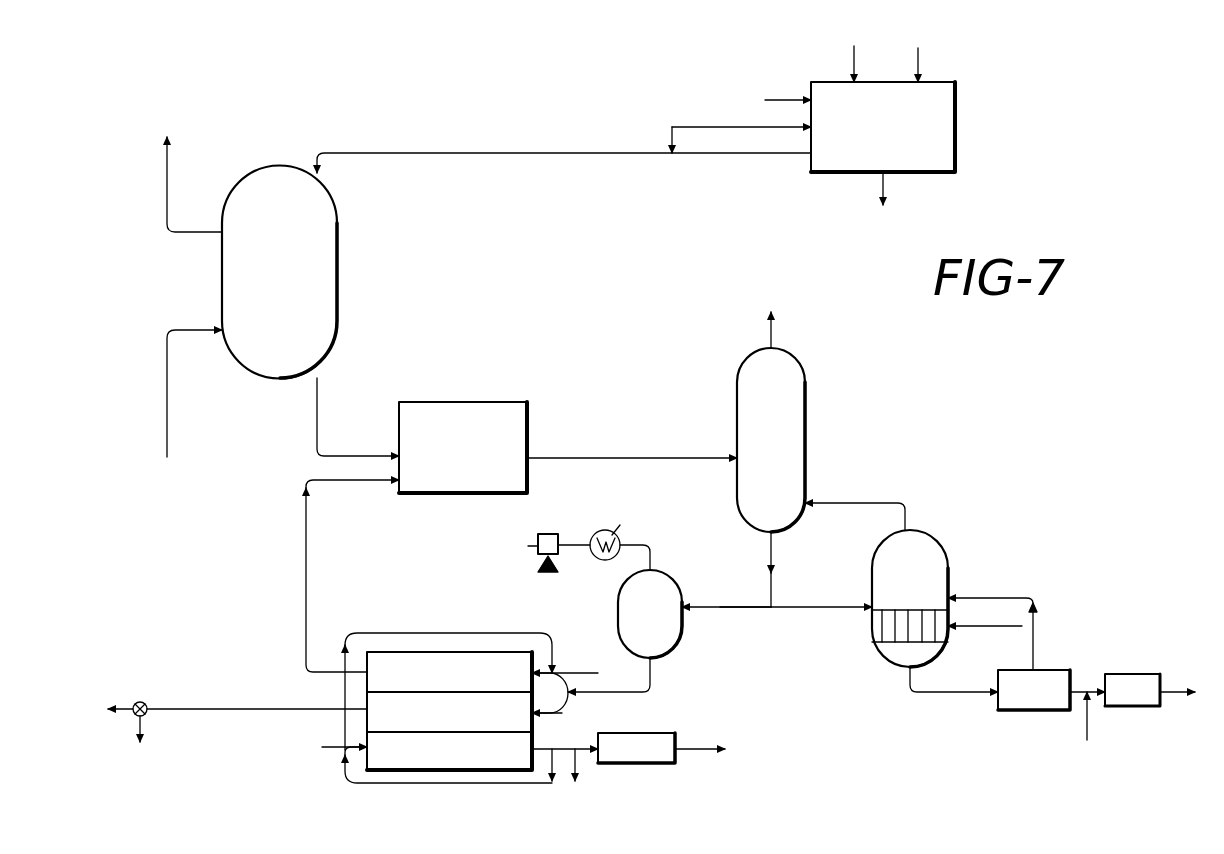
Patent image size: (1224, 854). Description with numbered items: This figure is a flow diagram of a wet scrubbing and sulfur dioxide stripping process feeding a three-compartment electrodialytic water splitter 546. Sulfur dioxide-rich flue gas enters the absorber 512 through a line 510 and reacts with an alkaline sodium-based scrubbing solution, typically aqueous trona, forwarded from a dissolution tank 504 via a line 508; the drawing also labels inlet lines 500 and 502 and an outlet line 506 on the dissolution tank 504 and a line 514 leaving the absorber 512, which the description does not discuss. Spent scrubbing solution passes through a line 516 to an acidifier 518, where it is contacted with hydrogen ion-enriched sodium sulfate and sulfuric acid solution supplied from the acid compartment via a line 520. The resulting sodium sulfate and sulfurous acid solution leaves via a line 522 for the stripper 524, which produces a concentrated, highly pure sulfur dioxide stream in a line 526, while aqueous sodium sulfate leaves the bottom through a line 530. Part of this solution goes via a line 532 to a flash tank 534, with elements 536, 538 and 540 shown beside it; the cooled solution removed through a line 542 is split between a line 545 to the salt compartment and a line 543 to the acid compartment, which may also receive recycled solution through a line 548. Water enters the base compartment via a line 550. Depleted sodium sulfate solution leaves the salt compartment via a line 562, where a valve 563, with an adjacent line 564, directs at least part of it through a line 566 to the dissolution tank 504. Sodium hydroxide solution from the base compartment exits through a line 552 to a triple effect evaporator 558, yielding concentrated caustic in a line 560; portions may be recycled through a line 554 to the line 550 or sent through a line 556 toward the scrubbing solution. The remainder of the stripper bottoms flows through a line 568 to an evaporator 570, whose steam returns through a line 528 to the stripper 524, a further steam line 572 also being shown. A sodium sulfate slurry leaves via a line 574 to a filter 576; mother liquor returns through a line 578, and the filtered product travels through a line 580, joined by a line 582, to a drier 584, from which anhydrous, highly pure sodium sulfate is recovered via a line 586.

The water inlet line 500 is at (918, 60).
The trona inlet line 502 is at (854, 58).
The dissolution tank 504 is at (955, 128).
The waste outlet line 506 is at (885, 185).
The line 508 is at (594, 130).
The line 510 is at (167, 408).
The absorber 512 is at (337, 291).
The flue gas outlet line to stack 514 is at (167, 200).
The line 516 is at (378, 425).
The acidifier 518 is at (482, 402).
The line 520 is at (362, 482).
The line 522 is at (632, 435).
The stripper 524 is at (805, 423).
The line 526 is at (772, 340).
The line 528 is at (878, 503).
The line 530 is at (773, 575).
The line 532 is at (752, 582).
The flash tank 534 is at (618, 612).
The feed tank inlet line 536 is at (655, 556).
The pump 538 is at (632, 512).
The valve 540 is at (528, 546).
The line 542 is at (655, 692).
The line 543 is at (614, 660).
The line 545 is at (560, 713).
The three-compartment electrodialytic water splitter 546 is at (367, 680).
The line 548 is at (460, 633).
The line 550 is at (326, 728).
The line 552 is at (590, 749).
The line 554 is at (535, 783).
The line 556 is at (780, 128).
The triple effect evaporator 558 is at (655, 765).
The line 560 is at (700, 749).
The line 562 is at (248, 690).
The valve 563 is at (158, 684).
The line to cell 564 is at (148, 728).
The line 566 is at (778, 80).
The line 568 is at (836, 607).
The evaporator 570 is at (948, 578).
The steam line 572 is at (948, 633).
The line 574 is at (950, 694).
The filter 576 is at (1035, 712).
The line 578 is at (1035, 640).
The line 580 is at (1080, 688).
The inlet line 582 is at (1087, 735).
The drier 584 is at (1130, 674).
The line 586 is at (1170, 688).